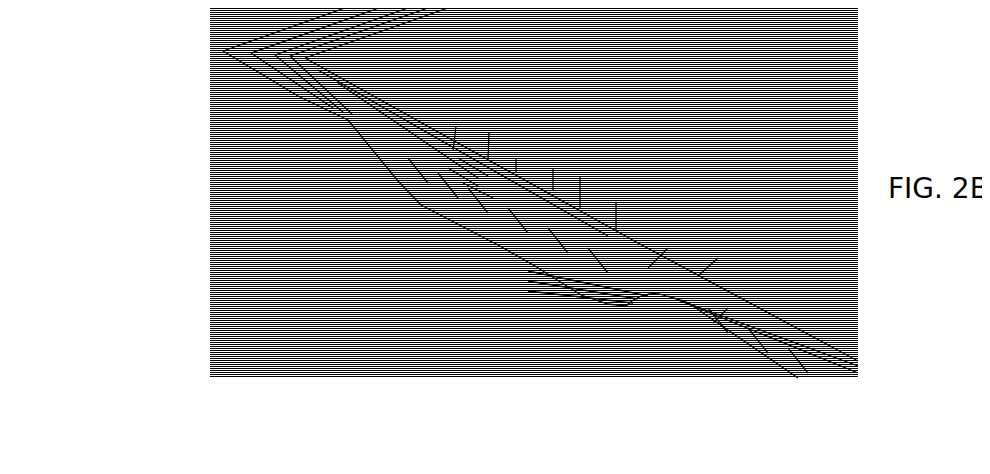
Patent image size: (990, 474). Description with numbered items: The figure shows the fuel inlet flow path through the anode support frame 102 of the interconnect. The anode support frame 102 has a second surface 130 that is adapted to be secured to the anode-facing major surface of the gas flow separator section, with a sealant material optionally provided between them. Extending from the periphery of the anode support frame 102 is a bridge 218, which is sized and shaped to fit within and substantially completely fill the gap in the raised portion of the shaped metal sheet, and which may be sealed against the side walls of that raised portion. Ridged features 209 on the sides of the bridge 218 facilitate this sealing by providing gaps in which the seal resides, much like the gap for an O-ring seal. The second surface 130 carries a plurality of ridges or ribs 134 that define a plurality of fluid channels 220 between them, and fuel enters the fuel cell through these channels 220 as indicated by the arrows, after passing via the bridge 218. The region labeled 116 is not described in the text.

The anode support frame 102 is at (268, 112).
The top surface of strip 116 is at (384, 110).
The fluid channels 220 is at (466, 163).
The second surface 130 is at (339, 115).
The ridged features 209 is at (385, 176).
The bridge 218 is at (408, 196).
The ridges 134 is at (470, 233).